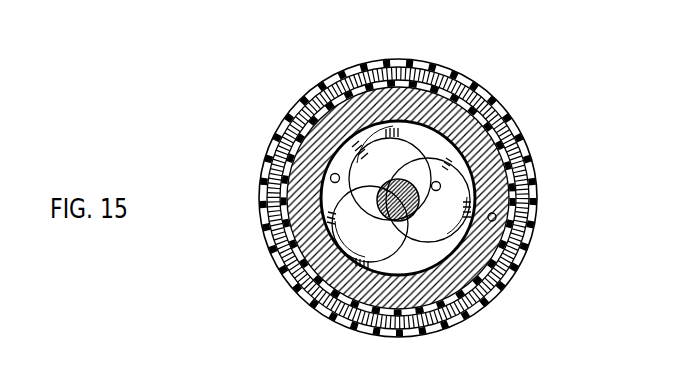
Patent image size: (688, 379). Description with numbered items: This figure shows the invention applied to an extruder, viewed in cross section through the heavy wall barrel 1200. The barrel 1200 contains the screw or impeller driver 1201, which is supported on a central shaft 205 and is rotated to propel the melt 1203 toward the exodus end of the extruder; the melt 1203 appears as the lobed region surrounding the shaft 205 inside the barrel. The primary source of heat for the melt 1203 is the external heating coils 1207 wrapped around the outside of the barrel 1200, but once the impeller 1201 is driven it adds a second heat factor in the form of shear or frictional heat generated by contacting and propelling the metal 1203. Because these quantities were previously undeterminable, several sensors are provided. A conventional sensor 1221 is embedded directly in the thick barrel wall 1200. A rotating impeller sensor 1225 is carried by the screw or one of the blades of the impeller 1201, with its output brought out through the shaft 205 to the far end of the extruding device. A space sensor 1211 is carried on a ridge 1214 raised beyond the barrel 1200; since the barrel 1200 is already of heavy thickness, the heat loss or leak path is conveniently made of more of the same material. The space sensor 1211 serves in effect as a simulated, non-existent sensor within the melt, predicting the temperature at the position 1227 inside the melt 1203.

The ridge 1214 is at (308, 304).
The space sensor 1211 is at (474, 95).
The external heating coils 1207 is at (323, 110).
The heavy wall barrel 1200 is at (490, 255).
The melt 1203 is at (435, 258).
The screw or impeller driver 1201 is at (345, 217).
The central conductor 205 is at (397, 217).
The simulated sensor position 1227 is at (330, 178).
The rotating impeller sensor 1225 is at (441, 185).
The conventional sensor 1221 is at (496, 218).